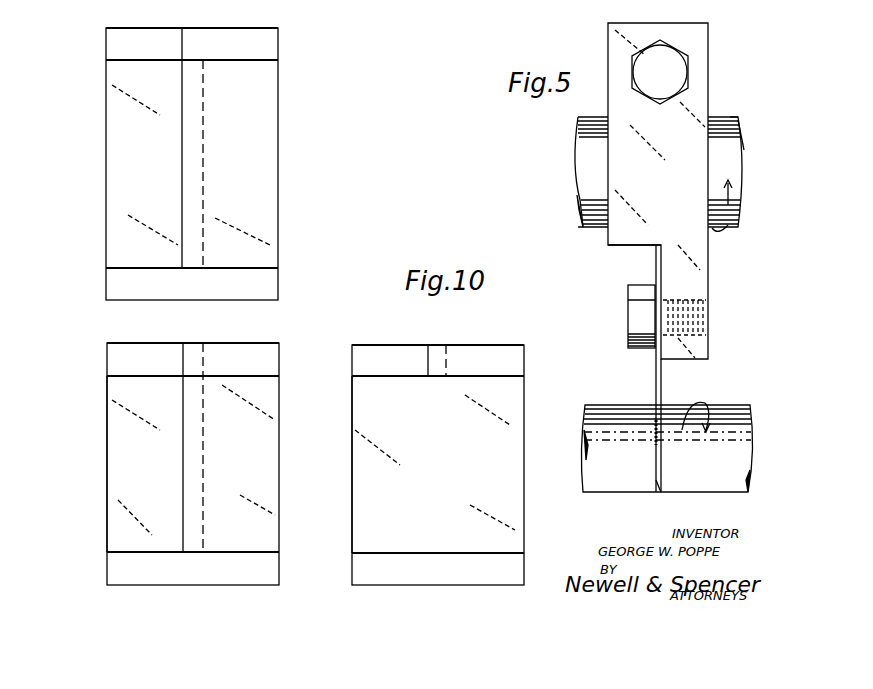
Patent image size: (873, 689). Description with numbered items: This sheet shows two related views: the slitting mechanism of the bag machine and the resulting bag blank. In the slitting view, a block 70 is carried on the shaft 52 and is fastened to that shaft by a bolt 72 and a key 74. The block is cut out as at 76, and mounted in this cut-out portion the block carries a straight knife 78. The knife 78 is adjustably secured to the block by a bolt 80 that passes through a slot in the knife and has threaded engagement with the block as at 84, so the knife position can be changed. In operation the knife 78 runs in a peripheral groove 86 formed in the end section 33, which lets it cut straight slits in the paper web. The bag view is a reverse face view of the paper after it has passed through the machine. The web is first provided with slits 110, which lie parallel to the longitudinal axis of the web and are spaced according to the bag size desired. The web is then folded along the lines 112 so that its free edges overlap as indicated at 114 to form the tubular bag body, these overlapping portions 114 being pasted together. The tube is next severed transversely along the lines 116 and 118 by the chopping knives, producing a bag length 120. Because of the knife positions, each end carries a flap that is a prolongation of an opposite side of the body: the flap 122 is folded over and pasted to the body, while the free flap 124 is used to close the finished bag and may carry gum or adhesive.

In FIG. 5, the end section 33 is at (720, 410).
In FIG. 5, the shaft 52 is at (726, 165).
In FIG. 5, the block 70 is at (697, 101).
In FIG. 5, the bolt 72 is at (676, 65).
In FIG. 5, the key 74 is at (732, 117).
In FIG. 5, the cut out 76 is at (620, 247).
In FIG. 5, the knife 78 is at (655, 380).
In FIG. 5, the bolt 80 is at (632, 324).
In FIG. 5, the threaded engagement 84 is at (690, 300).
In FIG. 5, the peripheral groove 86 is at (660, 487).
In FIG. 10, the slit 110 is at (280, 360).
In FIG. 10, the fold line 112 is at (107, 456).
In FIG. 10, the overlapping portion 114 is at (190, 184).
In FIG. 10, the severing line 116 is at (248, 28).
In FIG. 10, the severing line 118 is at (240, 62).
In FIG. 10, the bag length 120 is at (270, 122).
In FIG. 10, the flap 122 is at (270, 283).
In FIG. 10, the free flap 124 is at (272, 49).